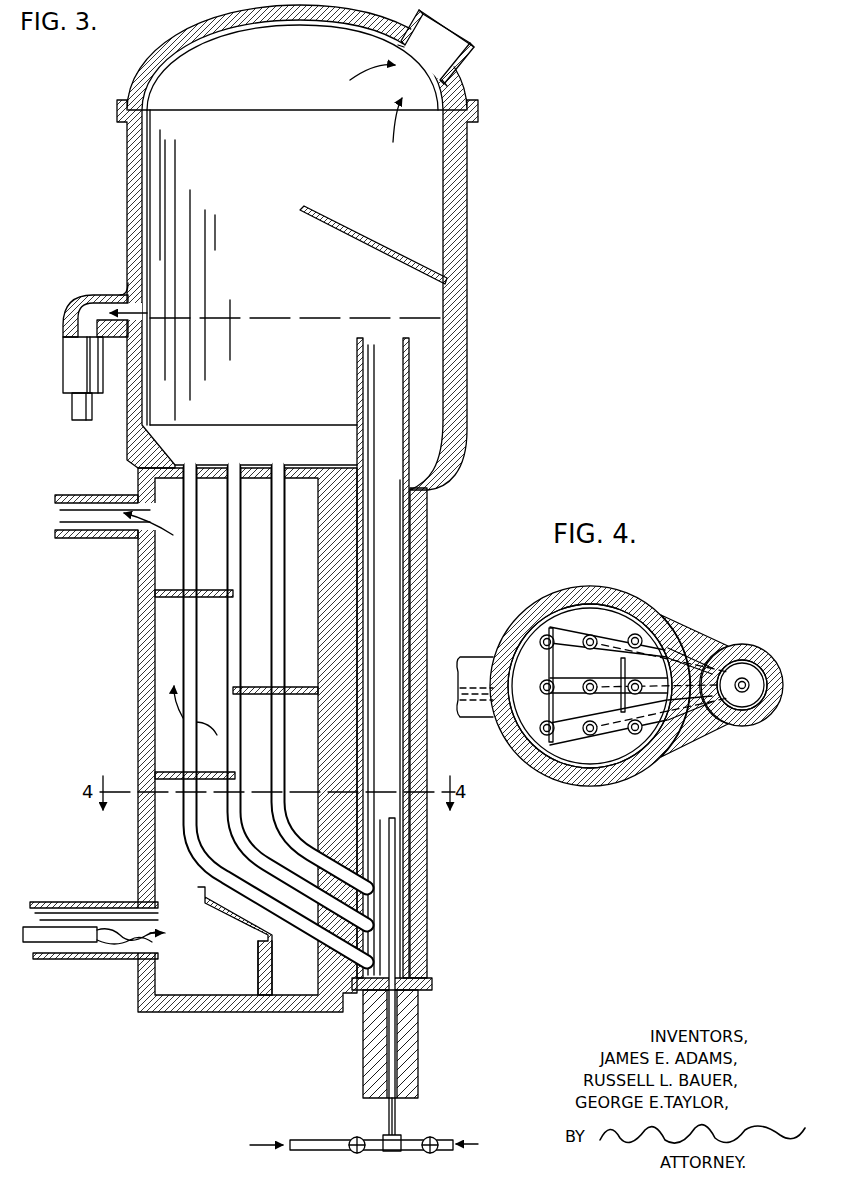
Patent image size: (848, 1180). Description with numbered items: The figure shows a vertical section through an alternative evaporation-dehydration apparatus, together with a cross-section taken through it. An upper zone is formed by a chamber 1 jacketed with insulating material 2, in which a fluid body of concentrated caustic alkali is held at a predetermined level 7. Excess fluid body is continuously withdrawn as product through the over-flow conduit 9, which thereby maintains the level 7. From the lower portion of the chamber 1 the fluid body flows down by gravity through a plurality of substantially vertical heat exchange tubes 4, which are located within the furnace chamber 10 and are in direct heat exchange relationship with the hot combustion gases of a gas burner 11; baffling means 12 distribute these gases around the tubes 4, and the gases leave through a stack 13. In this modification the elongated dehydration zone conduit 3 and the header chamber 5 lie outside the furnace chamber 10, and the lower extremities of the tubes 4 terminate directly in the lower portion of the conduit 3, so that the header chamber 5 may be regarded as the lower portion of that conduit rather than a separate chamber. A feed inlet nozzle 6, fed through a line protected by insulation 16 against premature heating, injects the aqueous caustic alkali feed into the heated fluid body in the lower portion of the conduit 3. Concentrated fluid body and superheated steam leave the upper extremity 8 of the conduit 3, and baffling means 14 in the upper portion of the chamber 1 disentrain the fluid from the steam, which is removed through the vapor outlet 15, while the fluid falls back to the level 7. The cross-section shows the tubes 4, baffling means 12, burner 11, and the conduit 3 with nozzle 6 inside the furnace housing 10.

In FIG. 3, the chamber 1 is at (414, 154).
In FIG. 3, the insulating material 2 is at (126, 160).
In FIG. 3, the elongated dehydration zone conduit 3 is at (400, 590).
In FIG. 4, the elongated dehydration zone conduit 3 is at (744, 668).
In FIG. 3, the heat exchange tubes 4 is at (271, 626).
In FIG. 4, the heat exchange tubes 4 is at (543, 650).
In FIG. 3, the header chamber 5 is at (402, 924).
In FIG. 4, the header chamber 5 is at (768, 712).
In FIG. 3, the feed inlet nozzle 6 is at (396, 826).
In FIG. 4, the feed inlet nozzle 6 is at (744, 698).
In FIG. 3, the fluid body level 7 is at (253, 318).
In FIG. 3, the upper extremity of the elongated dehydration zone conduit 8 is at (393, 338).
In FIG. 3, the over-flow conduit 9 is at (92, 294).
In FIG. 3, the furnace chamber 10 is at (173, 658).
In FIG. 4, the furnace chamber 10 is at (614, 622).
In FIG. 3, the gas burner 11 is at (88, 903).
In FIG. 4, the gas burner 11 is at (486, 658).
In FIG. 3, the baffling means 12 is at (297, 688).
In FIG. 4, the baffling means 12 is at (578, 738).
In FIG. 3, the stack 13 is at (95, 533).
In FIG. 3, the baffling means 14 is at (363, 223).
In FIG. 3, the vapor outlet 15 is at (447, 46).
In FIG. 3, the insulation 16 is at (367, 1050).